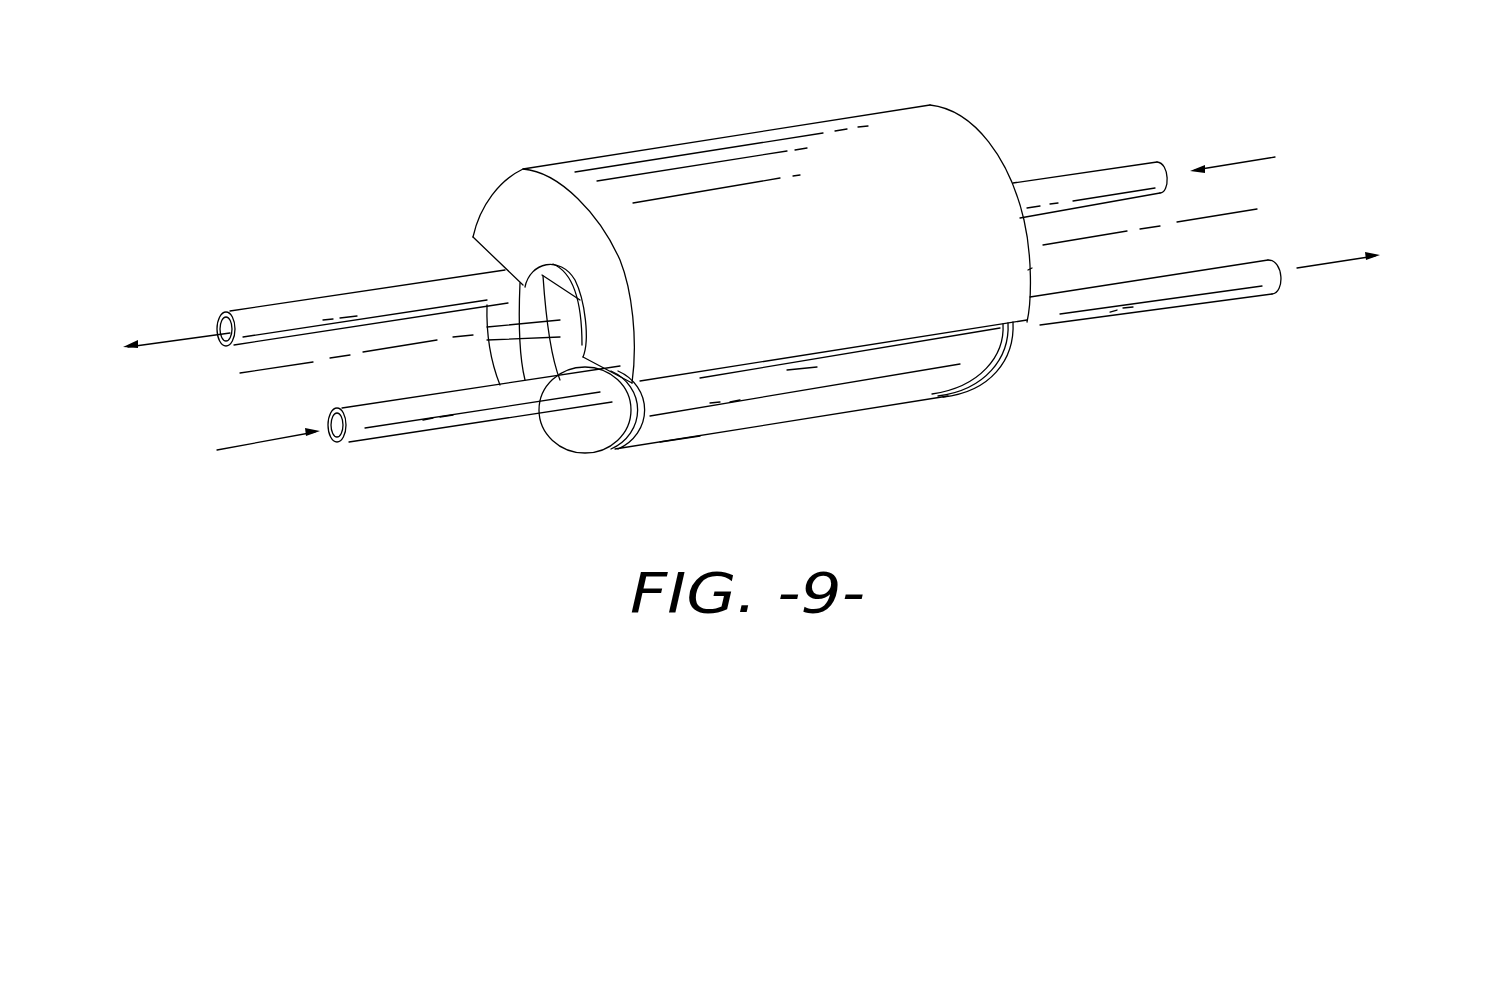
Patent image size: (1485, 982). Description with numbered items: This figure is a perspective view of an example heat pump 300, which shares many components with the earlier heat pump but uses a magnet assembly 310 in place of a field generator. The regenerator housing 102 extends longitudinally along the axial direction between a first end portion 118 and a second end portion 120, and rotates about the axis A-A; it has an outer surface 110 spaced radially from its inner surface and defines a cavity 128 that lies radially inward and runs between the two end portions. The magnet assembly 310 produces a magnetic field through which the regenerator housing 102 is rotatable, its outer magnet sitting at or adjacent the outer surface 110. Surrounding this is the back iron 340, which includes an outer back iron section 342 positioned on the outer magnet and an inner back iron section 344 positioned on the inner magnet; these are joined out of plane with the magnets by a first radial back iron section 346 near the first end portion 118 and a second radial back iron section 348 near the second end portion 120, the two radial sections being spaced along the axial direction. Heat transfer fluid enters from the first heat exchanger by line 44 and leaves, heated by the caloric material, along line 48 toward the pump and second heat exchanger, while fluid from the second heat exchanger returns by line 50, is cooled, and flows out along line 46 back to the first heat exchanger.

The heat pump 300 is at (433, 207).
The first end portion 118 is at (612, 140).
The back iron 340 is at (867, 133).
The outer back iron section 342 is at (900, 200).
The inner back iron section 344 is at (587, 303).
The second radial back iron section 348 is at (1033, 267).
The first radial back iron section 346 is at (541, 445).
The cavity 128 is at (540, 347).
The magnet assembly 310 is at (748, 378).
The regenerator housing 102 is at (840, 392).
The outer surface 110 is at (680, 437).
The second end portion 120 is at (955, 410).
The line 46 is at (343, 302).
The line 44 is at (377, 420).
The line 50 is at (1095, 180).
The line 48 is at (1177, 287).